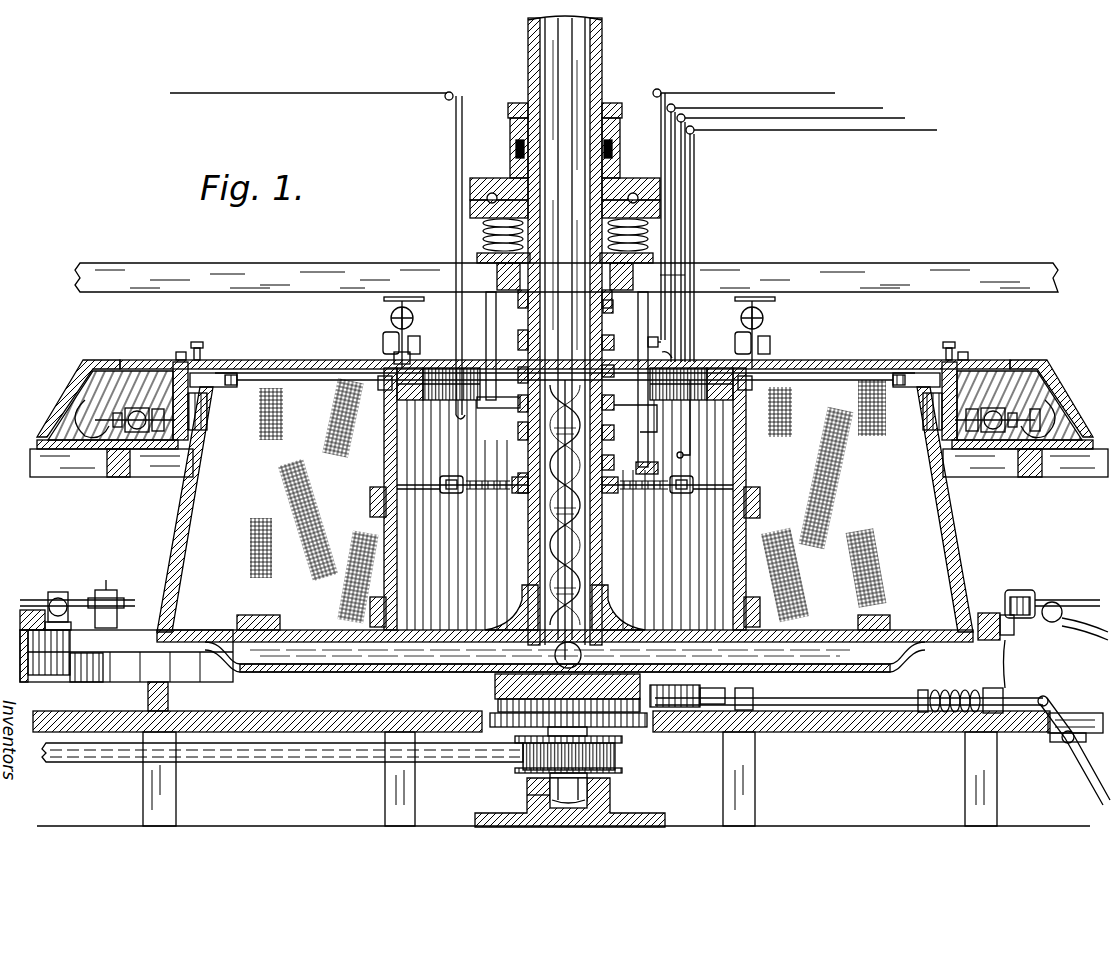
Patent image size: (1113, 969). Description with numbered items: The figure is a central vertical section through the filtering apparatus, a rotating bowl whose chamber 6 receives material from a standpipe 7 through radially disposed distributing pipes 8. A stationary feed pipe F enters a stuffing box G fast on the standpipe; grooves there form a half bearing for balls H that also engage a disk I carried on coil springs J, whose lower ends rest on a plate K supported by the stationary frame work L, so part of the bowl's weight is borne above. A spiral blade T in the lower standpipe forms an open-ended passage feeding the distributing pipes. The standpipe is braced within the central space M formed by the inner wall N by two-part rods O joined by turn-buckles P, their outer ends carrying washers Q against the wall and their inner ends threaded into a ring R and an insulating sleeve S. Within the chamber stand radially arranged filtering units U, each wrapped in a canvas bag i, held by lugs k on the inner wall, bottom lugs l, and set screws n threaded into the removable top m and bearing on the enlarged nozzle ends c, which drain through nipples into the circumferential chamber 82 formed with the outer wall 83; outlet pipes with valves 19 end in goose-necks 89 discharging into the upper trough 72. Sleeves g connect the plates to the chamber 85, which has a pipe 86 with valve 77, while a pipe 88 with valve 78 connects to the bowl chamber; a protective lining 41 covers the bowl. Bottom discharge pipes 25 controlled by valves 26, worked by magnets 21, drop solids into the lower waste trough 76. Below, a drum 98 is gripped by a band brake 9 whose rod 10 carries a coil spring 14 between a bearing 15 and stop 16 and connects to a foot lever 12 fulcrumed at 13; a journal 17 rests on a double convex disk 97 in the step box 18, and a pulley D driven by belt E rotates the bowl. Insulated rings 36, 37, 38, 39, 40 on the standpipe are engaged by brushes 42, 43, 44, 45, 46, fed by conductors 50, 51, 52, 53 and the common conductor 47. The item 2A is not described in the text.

The stationary feed pipe F is at (602, 72).
The standpipe 7 is at (572, 200).
The stuffing box G is at (622, 140).
The balls H is at (492, 192).
The disk I is at (470, 208).
The coil springs J is at (483, 240).
The plate K is at (497, 263).
The stationary frame work L is at (566, 266).
The conductor 47 is at (310, 93).
The conductor 50 is at (735, 93).
The conductor 51 is at (767, 108).
The conductor 52 is at (785, 118).
The conductor 53 is at (835, 130).
The brush 44 is at (503, 408).
The ring 36 is at (615, 335).
The ring 37 is at (614, 378).
The ring 38 is at (614, 405).
The ring 39 is at (614, 440).
The brush 45 is at (652, 383).
The brush 42 is at (662, 340).
The brush 43 is at (675, 362).
The enlarged outer extremity of discharge nozzle c is at (262, 360).
The removable top m is at (850, 360).
The set screws n is at (197, 342).
The upper trough 72 is at (575, 404).
The circumferential chamber 82 is at (200, 420).
The fitting 2A is at (1000, 410).
The goose-neck 89 is at (88, 436).
The valve 19 is at (153, 458).
The lining 41 is at (188, 532).
The filtering units U is at (571, 492).
The canvas bag i is at (568, 500).
The bottom lugs l is at (258, 615).
The distributing pipes 8 is at (908, 654).
The lower waste trough 76 is at (38, 595).
The valves 26 is at (106, 590).
The magnets 21 is at (1030, 595).
The discharge pipes 25 is at (1004, 642).
The belt E is at (330, 760).
The band brake 9 is at (495, 688).
The drum 98 is at (632, 727).
The operating pulley D is at (515, 778).
The journal 17 is at (612, 790).
The double convex disk 97 is at (588, 800).
The step box 18 is at (527, 796).
The rod 10 is at (812, 706).
The stop 16 is at (920, 708).
The coil spring 14 is at (950, 712).
The bearing 15 is at (1004, 695).
The fulcrum 13 is at (1078, 712).
The foot lever 12 is at (1085, 768).
The chamber 85 is at (445, 368).
The pipe 88 is at (752, 362).
The inner wall N is at (733, 535).
The central space M is at (565, 515).
The sleeve g is at (385, 390).
The washers or bearing disks Q is at (390, 478).
The two-part rods O is at (470, 493).
The turn-buckles P is at (480, 495).
The ring R is at (518, 493).
The insulating sleeve S is at (612, 493).
The ring 40 is at (630, 496).
The brush 46 is at (662, 492).
The lugs k is at (370, 500).
The spiral blade T is at (550, 558).
The valve 77 is at (391, 316).
The pipe 86 is at (413, 326).
The valve 78 is at (763, 318).
The outer wall 83 is at (979, 503).
The chamber 6 is at (945, 578).